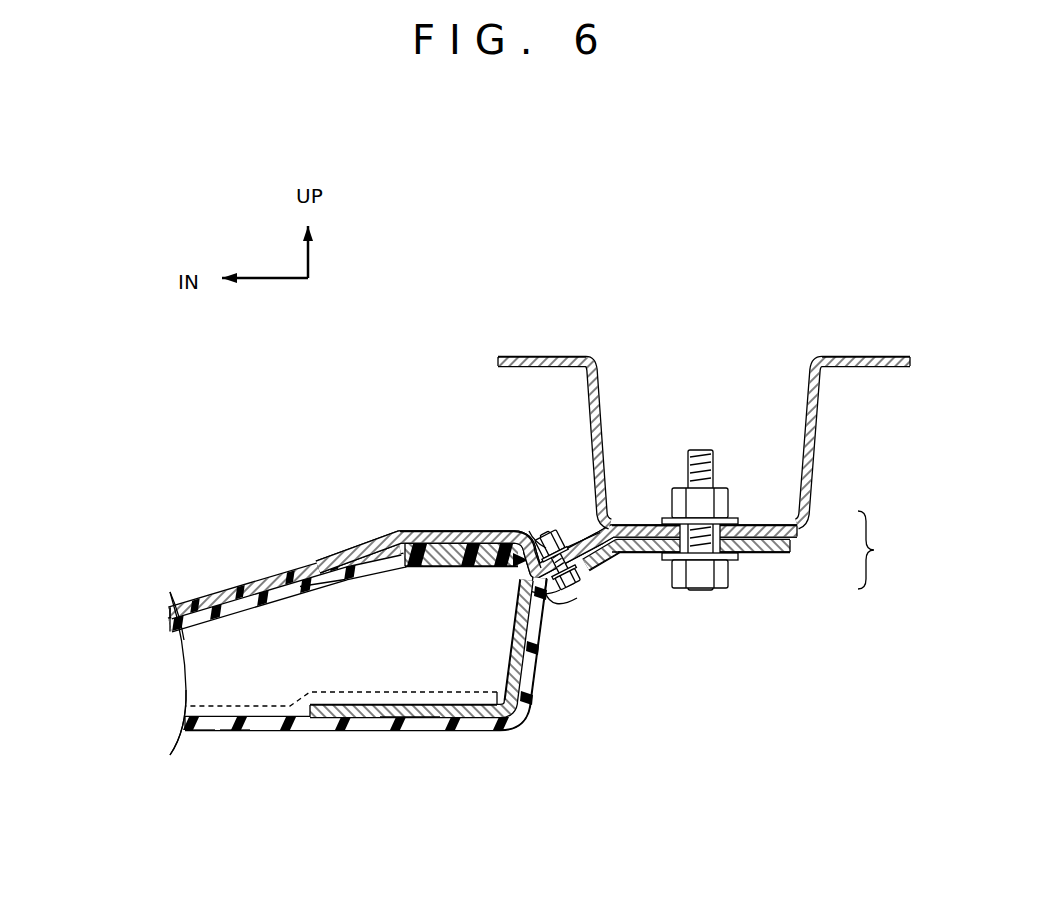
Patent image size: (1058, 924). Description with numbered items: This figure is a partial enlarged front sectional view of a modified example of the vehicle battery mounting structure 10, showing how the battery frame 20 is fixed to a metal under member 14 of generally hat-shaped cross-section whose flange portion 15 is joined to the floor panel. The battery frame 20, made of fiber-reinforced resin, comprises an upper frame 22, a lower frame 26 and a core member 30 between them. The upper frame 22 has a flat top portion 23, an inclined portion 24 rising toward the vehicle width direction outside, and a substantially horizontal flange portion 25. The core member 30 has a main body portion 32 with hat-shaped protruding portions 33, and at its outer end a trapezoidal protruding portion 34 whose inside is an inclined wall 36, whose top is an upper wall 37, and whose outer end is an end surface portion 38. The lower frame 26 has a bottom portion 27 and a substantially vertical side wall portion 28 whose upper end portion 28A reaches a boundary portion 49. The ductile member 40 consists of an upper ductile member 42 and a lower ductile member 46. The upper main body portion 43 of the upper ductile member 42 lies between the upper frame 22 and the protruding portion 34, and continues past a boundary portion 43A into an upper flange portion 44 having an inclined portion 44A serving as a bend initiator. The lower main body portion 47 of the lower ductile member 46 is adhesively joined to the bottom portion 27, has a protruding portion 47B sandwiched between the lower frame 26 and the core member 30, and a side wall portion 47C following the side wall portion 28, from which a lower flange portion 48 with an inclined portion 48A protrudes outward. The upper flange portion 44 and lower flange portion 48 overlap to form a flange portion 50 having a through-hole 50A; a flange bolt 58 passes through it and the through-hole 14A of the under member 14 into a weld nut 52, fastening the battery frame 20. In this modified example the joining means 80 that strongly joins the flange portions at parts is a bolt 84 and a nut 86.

The vehicle battery mounting structure 10 is at (448, 753).
The under member 14 is at (601, 392).
The through-hole 14A is at (674, 518).
The flange portion 15 is at (543, 357).
The battery frame 20 is at (262, 733).
The upper frame 22 is at (228, 600).
The top portion 23 is at (177, 601).
The inclined portion 24 is at (275, 596).
The flange portion 25 is at (483, 553).
The lower frame 26 is at (237, 733).
The bottom portion 27 is at (197, 735).
The side wall portion 28 is at (548, 598).
The upper end portion 28A is at (552, 582).
The core member 30 is at (198, 660).
The main body portion 32 is at (182, 712).
The protruding portion 33 is at (173, 640).
The protruding portion 34 is at (408, 718).
The inclined wall 36 is at (325, 590).
The upper wall 37 is at (447, 567).
The end surface portion 38 is at (532, 722).
The ductile member 40 is at (557, 551).
The upper ductile member 42 is at (343, 551).
The upper main body portion 43 is at (440, 531).
The boundary portion 43A is at (515, 532).
The upper flange portion 44 is at (797, 530).
The inclined portion 44A is at (572, 525).
The lower ductile member 46 is at (626, 562).
The lower main body portion 47 is at (418, 648).
The protruding portion 47B is at (322, 718).
The side wall portion 47C is at (507, 634).
The lower flange portion 48 is at (792, 547).
The inclined portion 48A is at (587, 566).
The boundary portion 49 is at (515, 603).
The flange portion 50 is at (760, 550).
The through-hole 50A is at (722, 560).
The weld nut 52 is at (719, 527).
The flange bolt 58 is at (694, 588).
The joining means 80 is at (557, 559).
The bolt 84 is at (548, 540).
The nut 86 is at (577, 595).